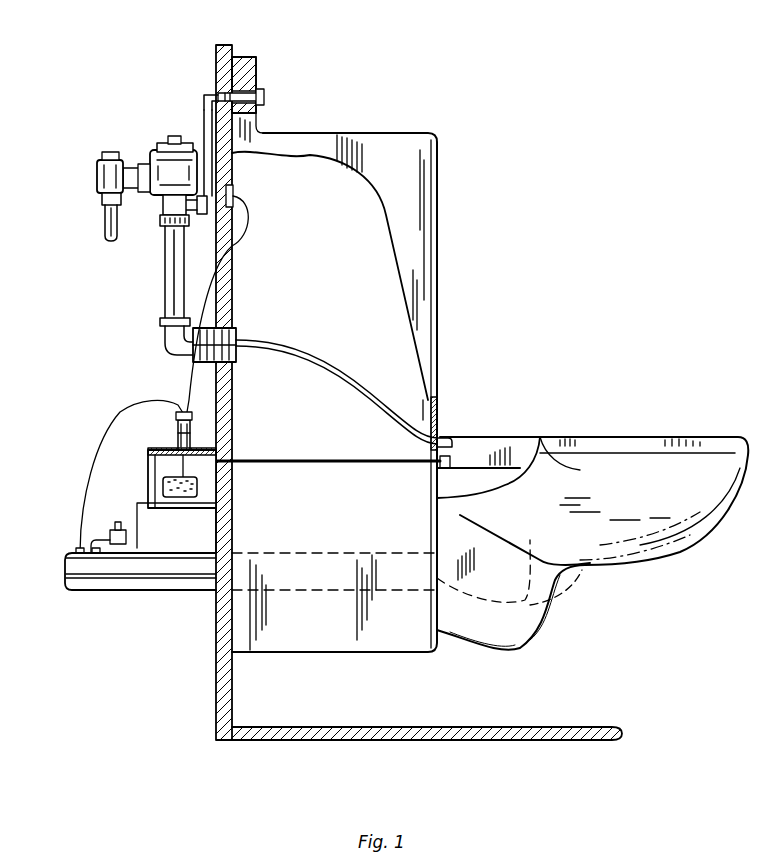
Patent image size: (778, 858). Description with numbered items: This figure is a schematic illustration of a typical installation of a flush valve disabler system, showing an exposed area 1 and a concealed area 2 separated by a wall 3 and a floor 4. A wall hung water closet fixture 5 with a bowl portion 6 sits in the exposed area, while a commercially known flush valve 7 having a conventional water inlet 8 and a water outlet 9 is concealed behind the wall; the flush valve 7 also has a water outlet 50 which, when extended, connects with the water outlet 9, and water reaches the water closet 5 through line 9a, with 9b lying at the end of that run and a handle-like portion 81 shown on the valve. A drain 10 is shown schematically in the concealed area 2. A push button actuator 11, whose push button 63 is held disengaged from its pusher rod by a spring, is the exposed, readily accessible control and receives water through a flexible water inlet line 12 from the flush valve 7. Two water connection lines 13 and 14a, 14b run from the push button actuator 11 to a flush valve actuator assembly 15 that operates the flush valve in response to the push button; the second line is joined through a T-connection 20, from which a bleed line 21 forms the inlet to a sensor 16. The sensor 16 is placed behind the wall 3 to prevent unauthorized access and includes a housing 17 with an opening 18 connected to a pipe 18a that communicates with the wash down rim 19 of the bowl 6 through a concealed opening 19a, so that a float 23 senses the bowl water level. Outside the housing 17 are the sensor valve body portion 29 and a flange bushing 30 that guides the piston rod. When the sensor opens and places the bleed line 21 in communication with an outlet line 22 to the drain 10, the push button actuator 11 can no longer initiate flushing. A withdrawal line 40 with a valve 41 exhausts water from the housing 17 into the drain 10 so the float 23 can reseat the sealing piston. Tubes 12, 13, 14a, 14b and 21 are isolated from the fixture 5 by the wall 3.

The exposed area 1 is at (626, 619).
The concealed area 2 is at (128, 674).
The wall 3 is at (213, 618).
The floor 4 is at (413, 725).
The wall hung water closet fixture 5 is at (443, 233).
The bowl portion 6 is at (650, 440).
The flush valve 7 is at (160, 207).
The water inlet 8 is at (102, 220).
The water outlet 9 is at (238, 333).
The line 9a is at (350, 380).
The tube outlet 9b is at (447, 440).
The drain 10 is at (103, 592).
The push button actuator 11 is at (263, 82).
The water inlet line 12 is at (207, 95).
The water connection line 13 is at (203, 125).
The line 14a is at (245, 175).
The line 14b is at (197, 210).
The flush valve actuator assembly 15 is at (200, 208).
The sensor 16 is at (163, 447).
The housing 17 is at (163, 473).
The opening 18 is at (217, 480).
The pipe 18a is at (327, 458).
The wash down rim 19 is at (575, 468).
The opening 19a is at (452, 460).
The T-connection 20 is at (233, 193).
The bleed line 21 is at (187, 377).
The outlet line 22 is at (90, 462).
The float 23 is at (167, 483).
The body portion 29 is at (193, 437).
The flange bushing 30 is at (200, 448).
The withdrawal line 40 is at (140, 522).
The valve 41 is at (127, 533).
The water outlet 50 is at (163, 290).
The push button 63 is at (264, 97).
The valve handle 81 is at (95, 173).